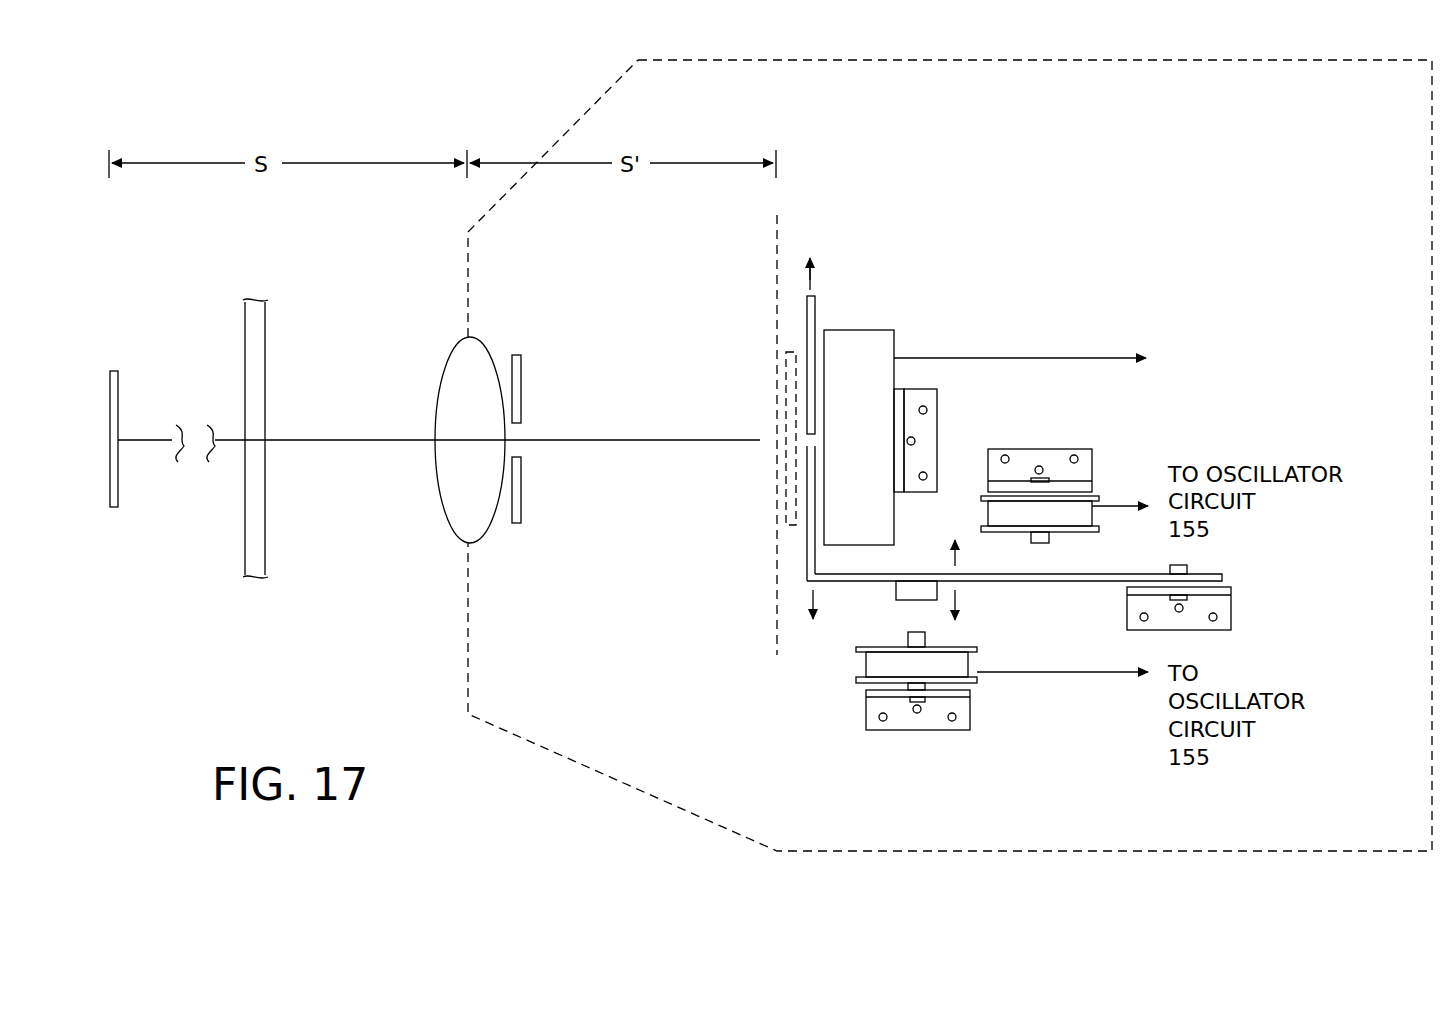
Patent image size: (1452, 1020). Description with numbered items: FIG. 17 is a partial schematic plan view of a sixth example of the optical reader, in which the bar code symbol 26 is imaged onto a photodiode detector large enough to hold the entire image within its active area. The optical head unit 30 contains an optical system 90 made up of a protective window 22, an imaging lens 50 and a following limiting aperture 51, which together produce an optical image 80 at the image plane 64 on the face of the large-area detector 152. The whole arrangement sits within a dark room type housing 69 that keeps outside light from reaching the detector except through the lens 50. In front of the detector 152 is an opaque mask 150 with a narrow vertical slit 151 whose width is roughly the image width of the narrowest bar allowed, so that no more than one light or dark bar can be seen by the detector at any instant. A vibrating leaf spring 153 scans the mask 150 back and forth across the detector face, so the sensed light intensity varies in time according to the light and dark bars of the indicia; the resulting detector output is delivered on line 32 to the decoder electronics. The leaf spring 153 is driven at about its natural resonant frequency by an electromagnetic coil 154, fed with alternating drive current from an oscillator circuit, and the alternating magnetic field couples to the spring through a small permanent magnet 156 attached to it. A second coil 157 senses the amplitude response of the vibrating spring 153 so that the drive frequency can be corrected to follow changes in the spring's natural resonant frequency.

The protective window 22 is at (243, 337).
The bar code symbol 26 is at (120, 396).
The optical head unit 30 is at (346, 134).
The line 32 is at (1048, 355).
The imaging lens 50 is at (452, 352).
The limiting aperture 51 is at (537, 409).
The image plane 64 is at (777, 584).
The dark room type housing 69 is at (672, 61).
The optical image 80 is at (785, 400).
The optical system 90 is at (506, 548).
The opaque mask 150 is at (819, 314).
The slit 151 is at (804, 440).
The large-area detector 152 is at (866, 338).
The vibrating leaf spring 153 is at (1068, 586).
The electromagnetic coil 154 is at (862, 662).
The permanent magnet 156 is at (898, 600).
The second coil 157 is at (990, 512).